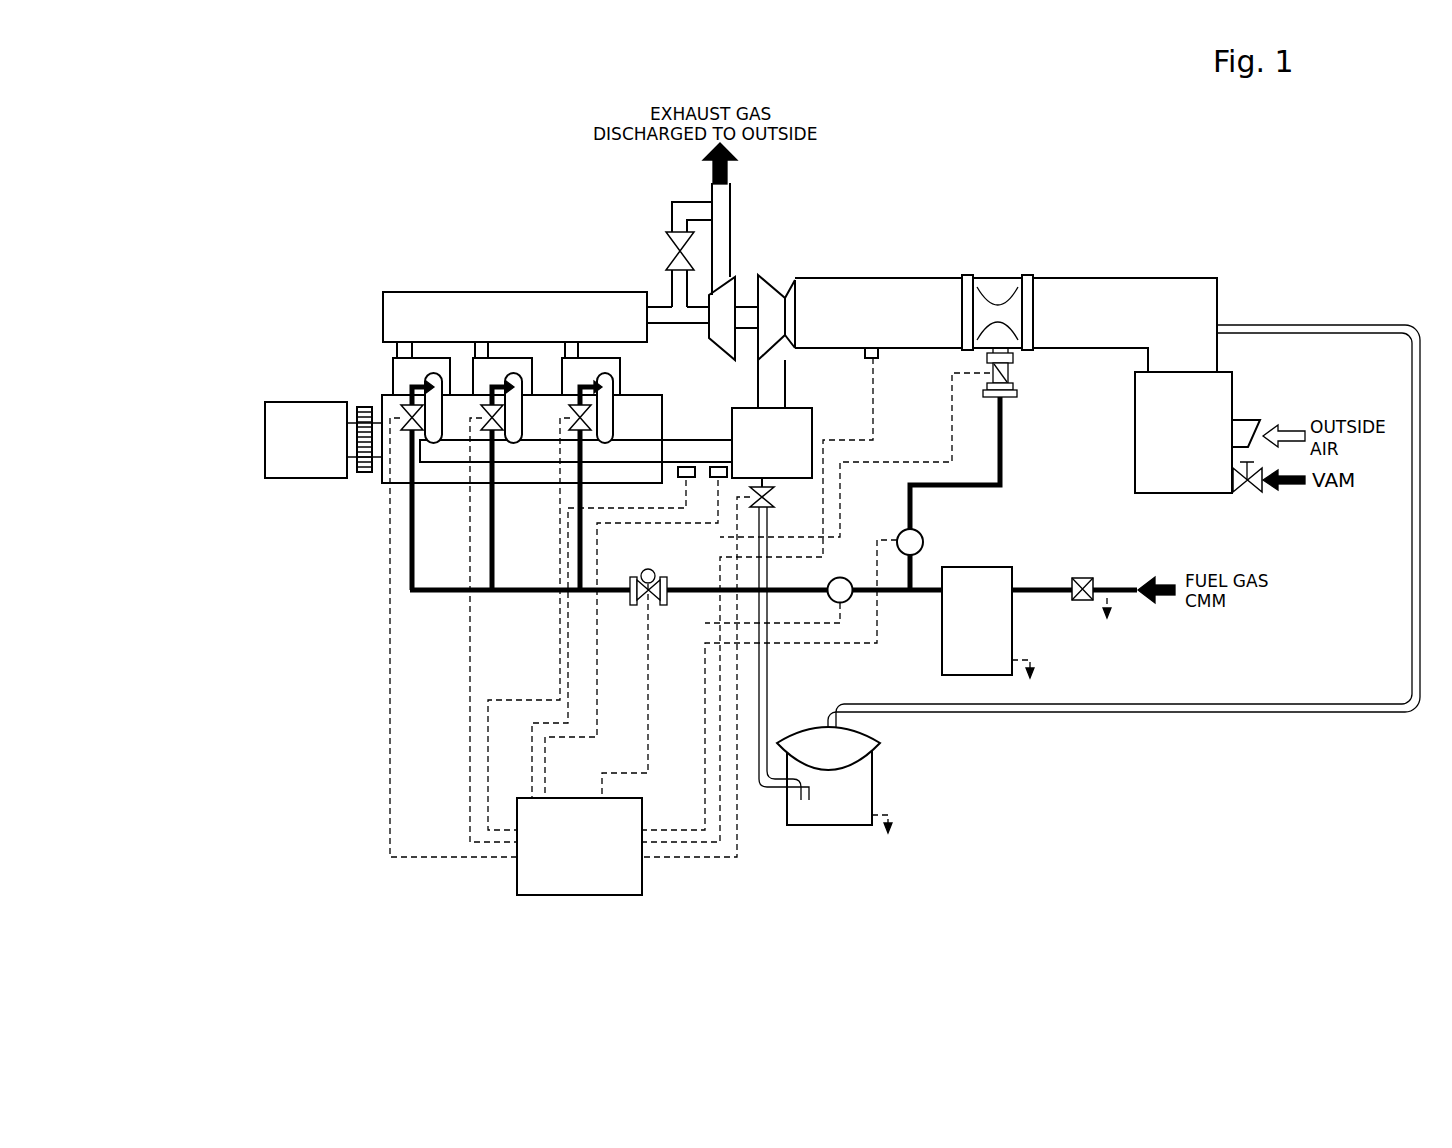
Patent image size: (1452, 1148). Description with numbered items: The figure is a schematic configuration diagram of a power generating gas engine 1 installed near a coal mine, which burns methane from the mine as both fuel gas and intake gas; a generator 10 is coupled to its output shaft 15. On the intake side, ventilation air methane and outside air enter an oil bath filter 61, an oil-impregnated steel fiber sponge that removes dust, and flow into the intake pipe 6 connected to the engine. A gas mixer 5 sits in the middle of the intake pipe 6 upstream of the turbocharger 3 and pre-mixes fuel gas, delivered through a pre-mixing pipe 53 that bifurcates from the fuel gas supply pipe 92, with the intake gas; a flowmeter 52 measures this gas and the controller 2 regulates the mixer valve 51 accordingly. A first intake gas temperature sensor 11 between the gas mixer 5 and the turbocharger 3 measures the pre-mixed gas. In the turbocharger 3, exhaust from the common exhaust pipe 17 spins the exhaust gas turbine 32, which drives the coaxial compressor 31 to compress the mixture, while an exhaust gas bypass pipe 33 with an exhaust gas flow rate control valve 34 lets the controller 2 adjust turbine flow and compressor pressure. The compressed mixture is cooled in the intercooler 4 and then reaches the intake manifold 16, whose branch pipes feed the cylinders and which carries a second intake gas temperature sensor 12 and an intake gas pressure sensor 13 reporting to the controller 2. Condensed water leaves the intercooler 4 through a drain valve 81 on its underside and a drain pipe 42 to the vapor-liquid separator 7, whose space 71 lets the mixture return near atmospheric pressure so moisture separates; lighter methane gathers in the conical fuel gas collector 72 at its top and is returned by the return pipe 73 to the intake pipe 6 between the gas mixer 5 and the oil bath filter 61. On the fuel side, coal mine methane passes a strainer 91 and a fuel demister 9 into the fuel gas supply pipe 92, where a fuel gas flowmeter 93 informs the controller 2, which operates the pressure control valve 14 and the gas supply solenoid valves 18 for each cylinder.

The power generating gas engine 1 is at (342, 280).
The controller 2 is at (588, 897).
The turbocharger 3 is at (758, 280).
The intercooler 4 is at (797, 408).
The gas mixer 5 is at (987, 278).
The intake pipe 6 is at (1175, 278).
The vapor-liquid separator 7 is at (860, 822).
The fuel demister 9 is at (1012, 632).
The generator 10 is at (265, 428).
The first intake gas temperature sensor 11 is at (882, 357).
The second intake gas temperature sensor 12 is at (686, 478).
The intake gas pressure sensor 13 is at (718, 478).
The pressure control valve 14 is at (640, 607).
The output shaft 15 is at (378, 468).
The intake manifold 16 is at (522, 462).
The common exhaust pipe 17 is at (436, 293).
The gas supply solenoid valve 18 is at (396, 404).
The compressor 31 is at (783, 282).
The exhaust gas turbine 32 is at (723, 342).
The exhaust gas bypass pipe 33 is at (670, 213).
The exhaust gas flow rate control valve 34 is at (668, 245).
The drain pipe 42 is at (766, 790).
The mixer valve 51 is at (1015, 373).
The flowmeter 52 is at (923, 540).
The pre-mixing pipe 53 is at (1005, 437).
The oil bath filter 61 is at (1235, 395).
The space 71 is at (857, 798).
The fuel gas collector 72 is at (850, 738).
The return pipe 73 is at (1342, 712).
The drain valve 81 is at (777, 498).
The strainer 91 is at (1085, 578).
The fuel gas supply pipe 92 is at (900, 590).
The fuel gas flowmeter 93 is at (840, 603).